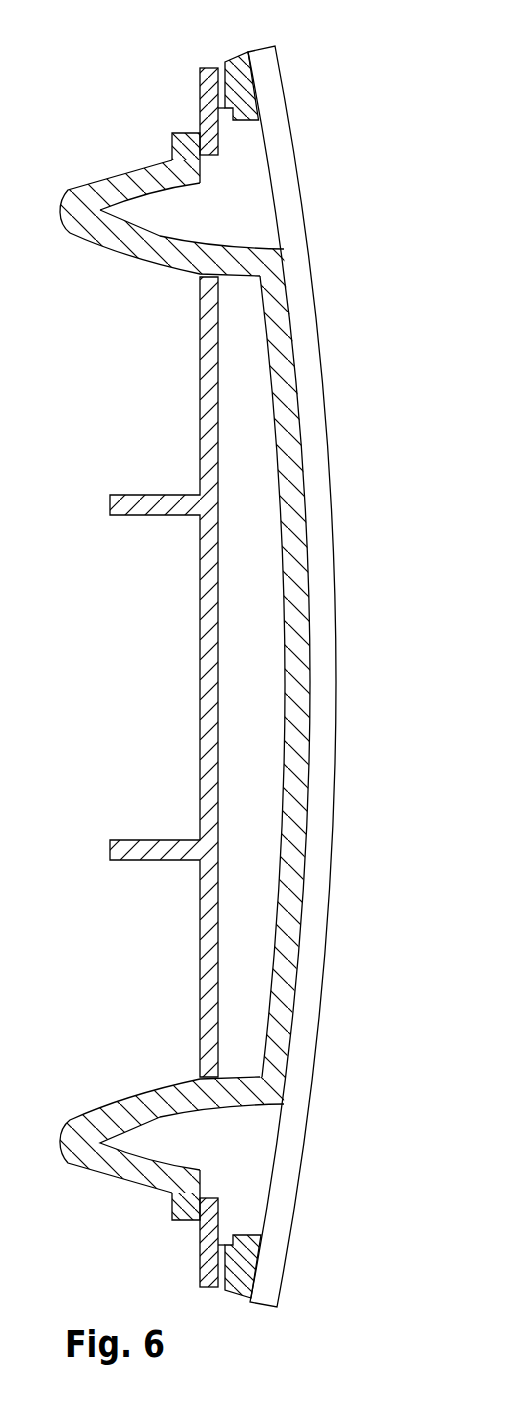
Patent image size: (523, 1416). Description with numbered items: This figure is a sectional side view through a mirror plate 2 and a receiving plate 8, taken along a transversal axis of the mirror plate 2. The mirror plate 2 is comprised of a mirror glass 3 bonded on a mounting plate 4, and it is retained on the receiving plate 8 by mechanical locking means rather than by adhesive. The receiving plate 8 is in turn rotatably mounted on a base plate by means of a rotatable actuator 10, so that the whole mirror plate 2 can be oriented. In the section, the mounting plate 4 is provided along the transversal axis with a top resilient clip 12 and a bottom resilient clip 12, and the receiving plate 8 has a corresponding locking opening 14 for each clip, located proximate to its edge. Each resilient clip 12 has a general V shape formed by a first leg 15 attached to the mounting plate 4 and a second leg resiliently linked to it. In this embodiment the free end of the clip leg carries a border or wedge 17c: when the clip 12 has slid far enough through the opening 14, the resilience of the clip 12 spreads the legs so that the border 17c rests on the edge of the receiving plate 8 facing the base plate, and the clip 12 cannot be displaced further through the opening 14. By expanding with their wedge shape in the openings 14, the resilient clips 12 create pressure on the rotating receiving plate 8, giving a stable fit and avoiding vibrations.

The mirror plate 2 is at (215, 34).
The mirror glass 3 is at (325, 608).
The mounting plate 4 is at (297, 713).
The receiving plate 8 is at (210, 952).
The rotatable actuator 10 is at (147, 727).
The resilient clip 12 is at (123, 183).
The locking opening 14 is at (212, 207).
The first leg 15 is at (157, 242).
The border or wedge 17c is at (185, 1213).